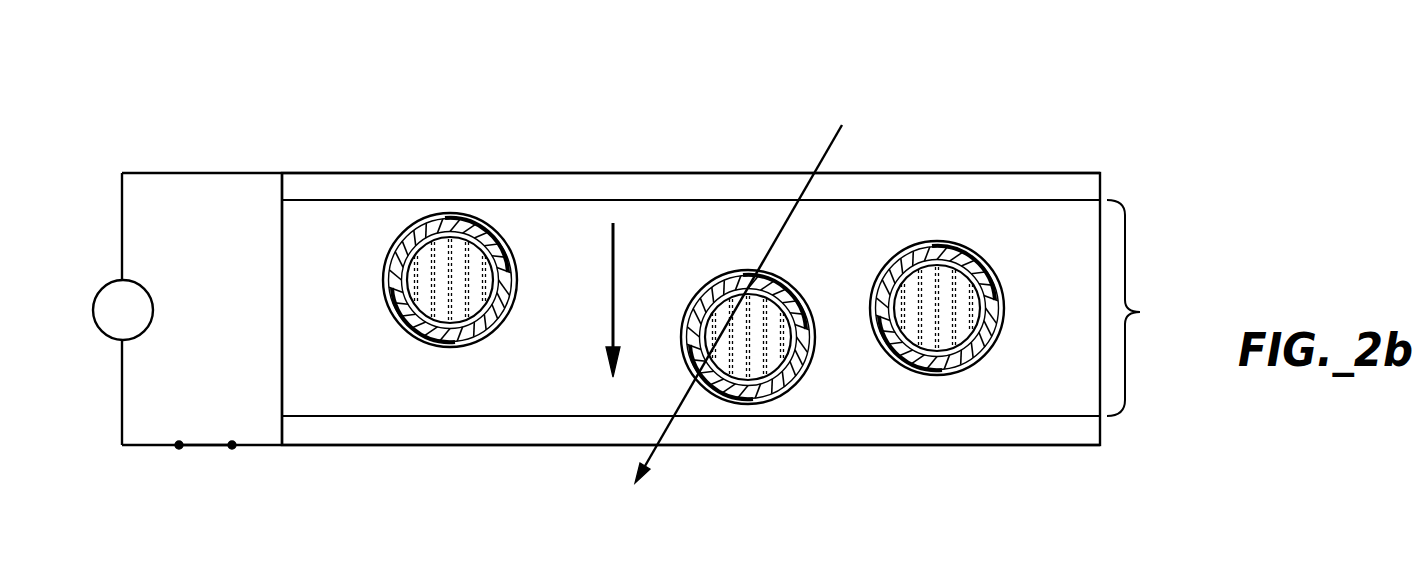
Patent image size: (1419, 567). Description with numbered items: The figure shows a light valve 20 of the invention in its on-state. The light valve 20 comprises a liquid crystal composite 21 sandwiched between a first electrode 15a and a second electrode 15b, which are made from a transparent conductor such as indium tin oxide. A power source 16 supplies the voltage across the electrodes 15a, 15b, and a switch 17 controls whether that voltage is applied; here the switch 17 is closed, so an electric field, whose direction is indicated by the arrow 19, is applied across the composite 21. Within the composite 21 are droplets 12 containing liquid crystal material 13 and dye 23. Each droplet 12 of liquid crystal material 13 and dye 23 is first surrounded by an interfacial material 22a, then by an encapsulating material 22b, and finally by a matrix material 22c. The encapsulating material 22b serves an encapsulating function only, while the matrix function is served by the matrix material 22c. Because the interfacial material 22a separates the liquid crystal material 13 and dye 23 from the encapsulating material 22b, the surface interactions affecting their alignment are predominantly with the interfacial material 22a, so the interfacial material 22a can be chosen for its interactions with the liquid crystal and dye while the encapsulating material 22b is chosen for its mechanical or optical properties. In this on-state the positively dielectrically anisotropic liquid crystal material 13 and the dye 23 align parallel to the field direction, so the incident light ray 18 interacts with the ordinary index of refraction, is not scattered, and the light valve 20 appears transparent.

The droplets 12 is at (503, 283).
The liquid crystal material 13 is at (452, 305).
The first electrode 15a is at (985, 171).
The second electrode 15b is at (1103, 436).
The power source 16 is at (144, 289).
The switch 17 is at (208, 443).
The incident light ray 18 is at (830, 148).
The arrow 19 is at (615, 273).
The light valve 20 is at (1157, 174).
The liquid crystal composite 21 is at (1142, 312).
The interfacial material 22a is at (506, 256).
The encapsulating material 22b is at (497, 325).
The matrix material 22c is at (663, 228).
The dye 23 is at (456, 312).